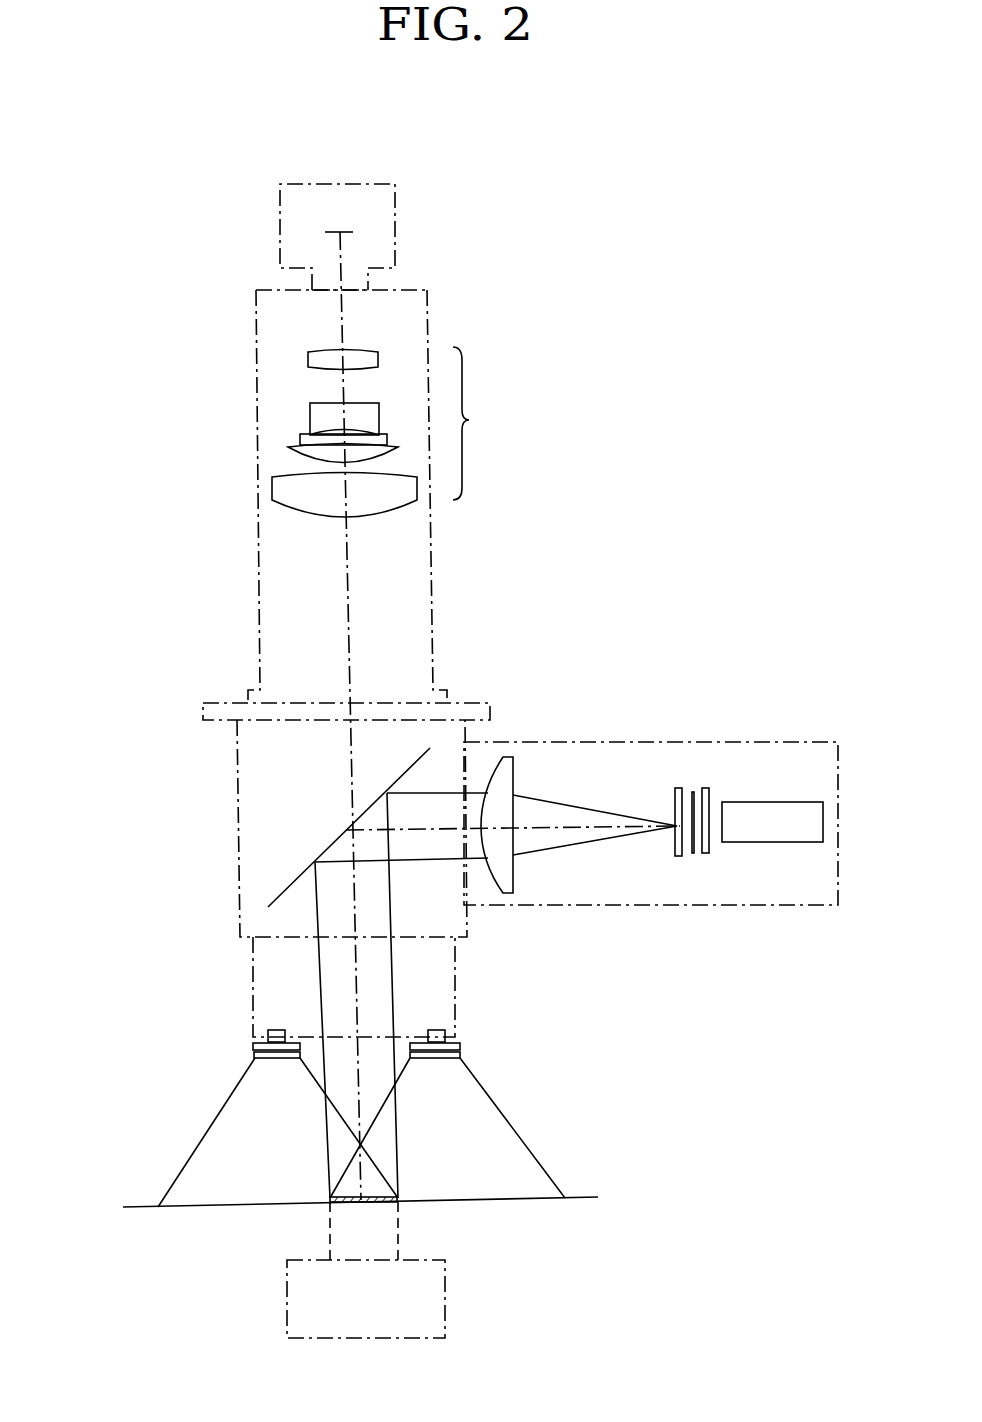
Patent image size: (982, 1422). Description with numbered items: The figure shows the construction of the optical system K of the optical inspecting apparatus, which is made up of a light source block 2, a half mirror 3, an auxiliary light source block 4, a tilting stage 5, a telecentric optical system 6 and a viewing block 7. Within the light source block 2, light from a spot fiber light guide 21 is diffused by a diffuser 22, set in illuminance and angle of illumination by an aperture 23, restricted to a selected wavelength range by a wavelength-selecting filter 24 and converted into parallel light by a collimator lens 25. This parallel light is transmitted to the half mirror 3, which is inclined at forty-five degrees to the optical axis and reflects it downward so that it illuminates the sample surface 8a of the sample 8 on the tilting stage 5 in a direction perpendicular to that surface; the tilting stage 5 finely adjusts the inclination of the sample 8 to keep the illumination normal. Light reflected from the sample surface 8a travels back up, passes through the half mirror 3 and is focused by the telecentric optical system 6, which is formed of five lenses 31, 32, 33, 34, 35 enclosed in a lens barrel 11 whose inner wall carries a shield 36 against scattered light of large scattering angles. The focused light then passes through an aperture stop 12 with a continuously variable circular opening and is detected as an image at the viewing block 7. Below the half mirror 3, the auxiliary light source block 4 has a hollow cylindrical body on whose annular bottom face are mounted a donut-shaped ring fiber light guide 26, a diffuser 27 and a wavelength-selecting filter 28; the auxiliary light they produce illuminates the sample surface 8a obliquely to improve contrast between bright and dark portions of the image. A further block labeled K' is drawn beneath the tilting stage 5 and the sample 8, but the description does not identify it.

The light source block 2 is at (722, 738).
The half mirror 3 is at (313, 865).
The auxiliary light source block 4 is at (455, 977).
The tilting stage 5 is at (587, 1197).
The telecentric optical system 6 is at (473, 423).
The viewing block 7 is at (395, 200).
The sample 8 is at (347, 1205).
The sample surface 8a is at (383, 1197).
The lens barrel 11 is at (433, 562).
The aperture stop 12 is at (352, 297).
The spot fiber light guide 21 is at (780, 802).
The diffuser 22 is at (710, 850).
The aperture 23 is at (693, 792).
The wavelength-selecting filter 24 is at (673, 795).
The collimator lens 25 is at (513, 770).
The ring fiber light guide 26 is at (270, 1030).
The diffuser 27 is at (255, 1045).
The wavelength-selecting filter 28 is at (255, 1053).
The lens 31 is at (272, 485).
The lens 32 is at (288, 450).
The lens 33 is at (300, 440).
The lens 34 is at (310, 418).
The lens 35 is at (308, 358).
The shield 36 is at (259, 610).
The optical system K is at (599, 203).
The image processing unit K' is at (427, 1299).